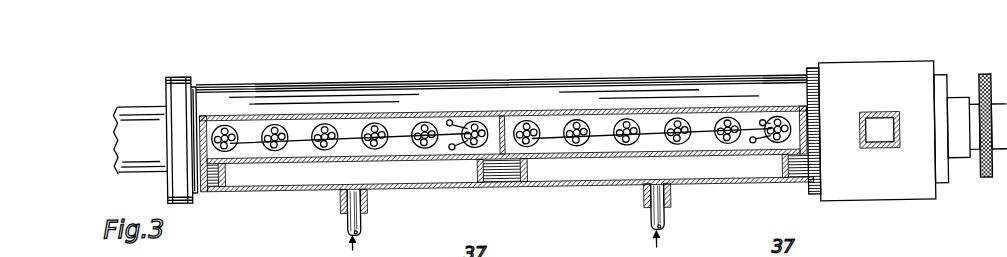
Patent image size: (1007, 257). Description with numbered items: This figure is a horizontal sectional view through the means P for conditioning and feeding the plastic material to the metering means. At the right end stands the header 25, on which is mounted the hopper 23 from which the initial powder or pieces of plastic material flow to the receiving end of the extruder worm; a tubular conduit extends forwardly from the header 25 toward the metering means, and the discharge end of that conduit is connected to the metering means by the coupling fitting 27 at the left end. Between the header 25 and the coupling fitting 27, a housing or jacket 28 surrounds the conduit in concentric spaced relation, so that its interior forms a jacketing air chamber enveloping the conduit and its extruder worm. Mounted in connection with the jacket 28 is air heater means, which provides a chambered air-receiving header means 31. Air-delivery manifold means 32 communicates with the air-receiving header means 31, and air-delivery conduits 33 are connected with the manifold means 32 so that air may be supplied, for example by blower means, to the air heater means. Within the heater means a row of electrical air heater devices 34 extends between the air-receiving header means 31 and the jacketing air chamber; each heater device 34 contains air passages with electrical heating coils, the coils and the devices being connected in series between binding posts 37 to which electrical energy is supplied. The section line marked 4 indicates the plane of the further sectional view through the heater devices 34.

The coupling fitting 27 is at (141, 106).
The housing or jacket 28 is at (580, 89).
The means for conditioning and feeding the plastic material P is at (497, 80).
The air-receiving header means 31 is at (310, 114).
The air-delivery manifold means 32 is at (455, 188).
The electrical air heater devices 34 is at (260, 120).
The binding posts 37 is at (448, 119).
The air-delivery conduits 33 is at (358, 221).
The header 25 is at (917, 76).
The hopper 23 is at (881, 118).
The section line 4- 4 is at (335, 246).